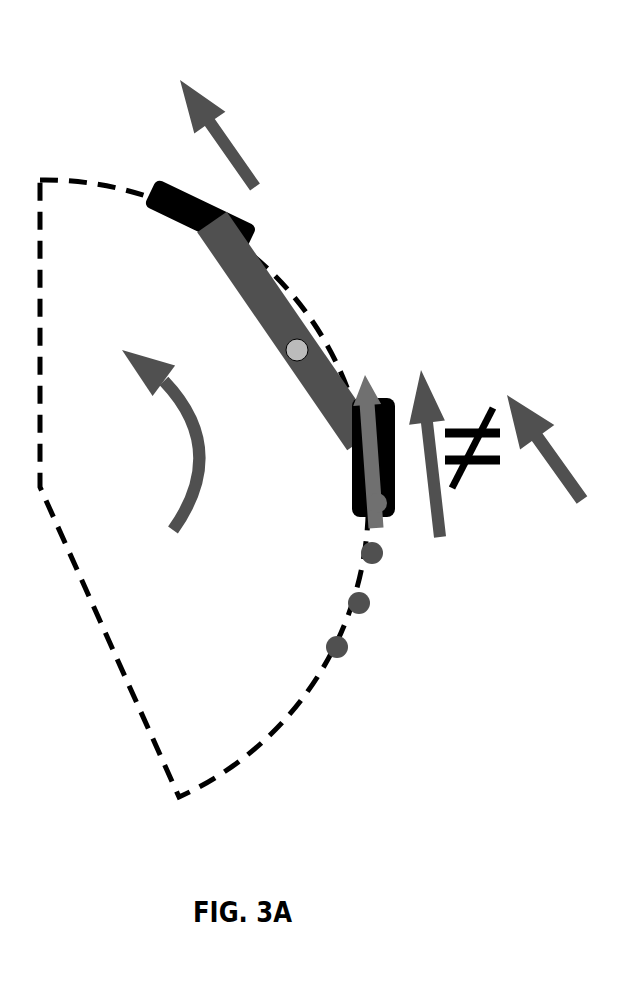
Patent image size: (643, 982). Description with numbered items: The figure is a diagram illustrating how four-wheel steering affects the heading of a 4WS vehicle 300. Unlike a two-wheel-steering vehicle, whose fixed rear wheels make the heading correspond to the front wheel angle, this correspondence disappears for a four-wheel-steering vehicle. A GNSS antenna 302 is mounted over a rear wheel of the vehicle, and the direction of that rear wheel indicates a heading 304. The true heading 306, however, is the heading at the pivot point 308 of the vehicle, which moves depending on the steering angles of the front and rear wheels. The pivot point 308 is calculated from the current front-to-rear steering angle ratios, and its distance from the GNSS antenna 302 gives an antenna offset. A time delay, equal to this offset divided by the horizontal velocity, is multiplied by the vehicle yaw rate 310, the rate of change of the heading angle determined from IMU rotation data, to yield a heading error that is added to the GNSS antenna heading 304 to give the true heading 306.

The 4WS vehicle 300 is at (313, 413).
The GNSS antenna 302 is at (352, 437).
The heading 304 is at (426, 507).
The true heading 306 is at (233, 153).
The pivot point 308 is at (302, 350).
The vehicle yaw rate 310 is at (186, 497).